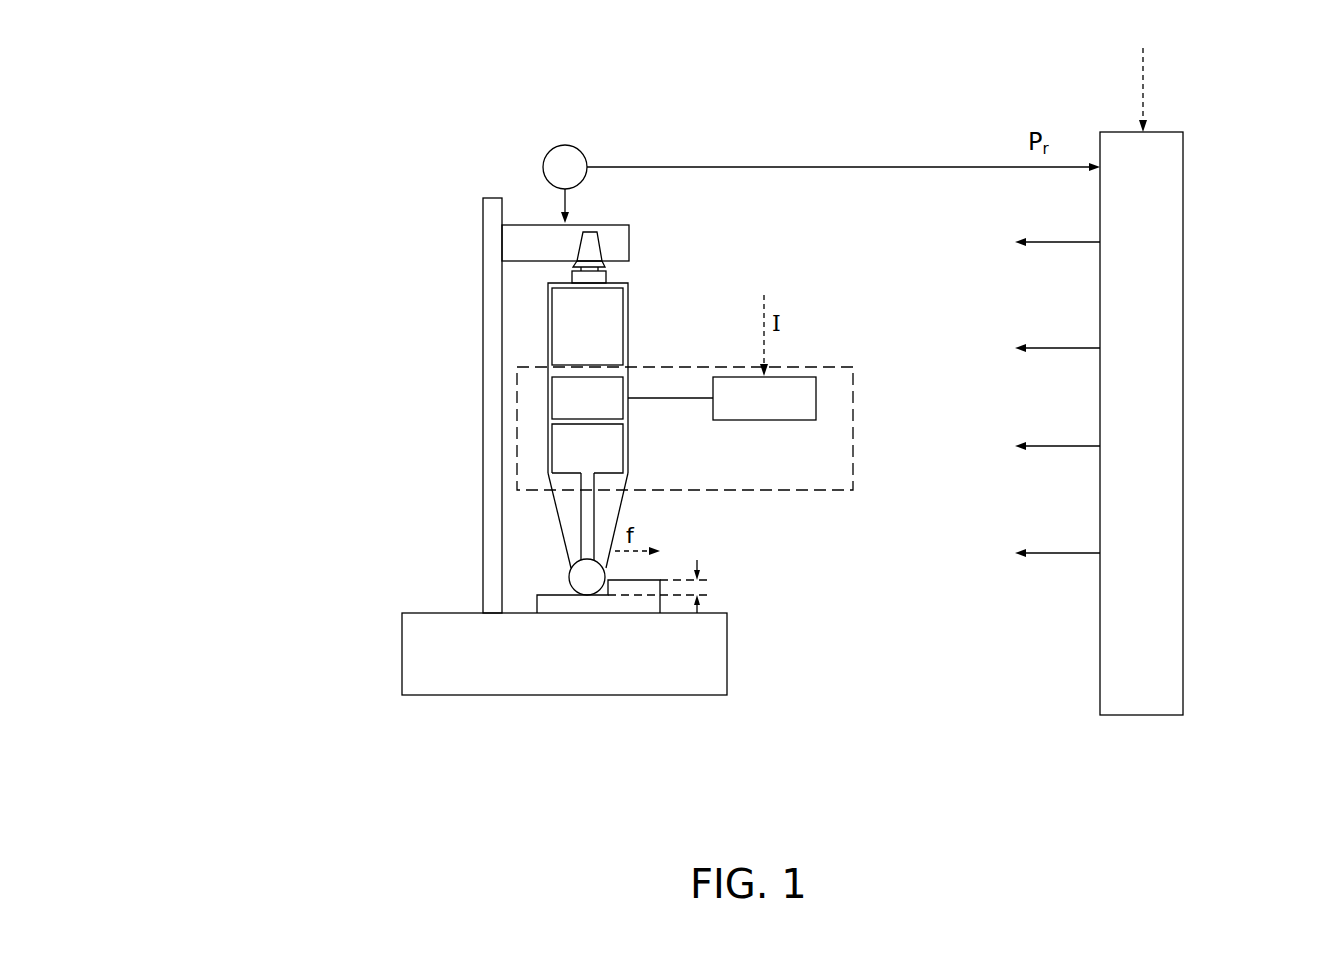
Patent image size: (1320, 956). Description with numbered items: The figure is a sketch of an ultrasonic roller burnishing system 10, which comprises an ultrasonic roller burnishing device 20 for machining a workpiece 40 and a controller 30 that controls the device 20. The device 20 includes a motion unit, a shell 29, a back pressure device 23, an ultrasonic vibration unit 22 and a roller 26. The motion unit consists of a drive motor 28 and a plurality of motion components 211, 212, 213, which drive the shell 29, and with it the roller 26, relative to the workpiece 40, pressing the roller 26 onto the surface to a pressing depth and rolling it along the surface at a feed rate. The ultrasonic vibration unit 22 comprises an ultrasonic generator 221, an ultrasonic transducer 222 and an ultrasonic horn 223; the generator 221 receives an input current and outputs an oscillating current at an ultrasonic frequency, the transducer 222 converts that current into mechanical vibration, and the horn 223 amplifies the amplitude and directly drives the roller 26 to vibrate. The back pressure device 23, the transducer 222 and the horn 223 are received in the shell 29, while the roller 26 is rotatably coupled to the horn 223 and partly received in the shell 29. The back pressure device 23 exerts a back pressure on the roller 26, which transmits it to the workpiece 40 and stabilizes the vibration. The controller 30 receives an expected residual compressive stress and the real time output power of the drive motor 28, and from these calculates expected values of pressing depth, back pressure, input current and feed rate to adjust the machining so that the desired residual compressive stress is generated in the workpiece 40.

The ultrasonic roller burnishing system 10 is at (250, 80).
The ultrasonic roller burnishing device 20 is at (433, 136).
The drive motor 28 is at (565, 145).
The motion component 211 is at (610, 232).
The motion component 212 is at (497, 282).
The shell 29 is at (630, 322).
The back pressure device 23 is at (565, 347).
The ultrasonic transducer 222 is at (575, 407).
The ultrasonic horn 223 is at (572, 460).
The ultrasonic vibration unit 22 is at (826, 367).
The ultrasonic generator 221 is at (770, 408).
The roller 26 is at (590, 577).
The workpiece 40 is at (555, 606).
The motion component 213 is at (703, 655).
The controller 30 is at (1183, 257).